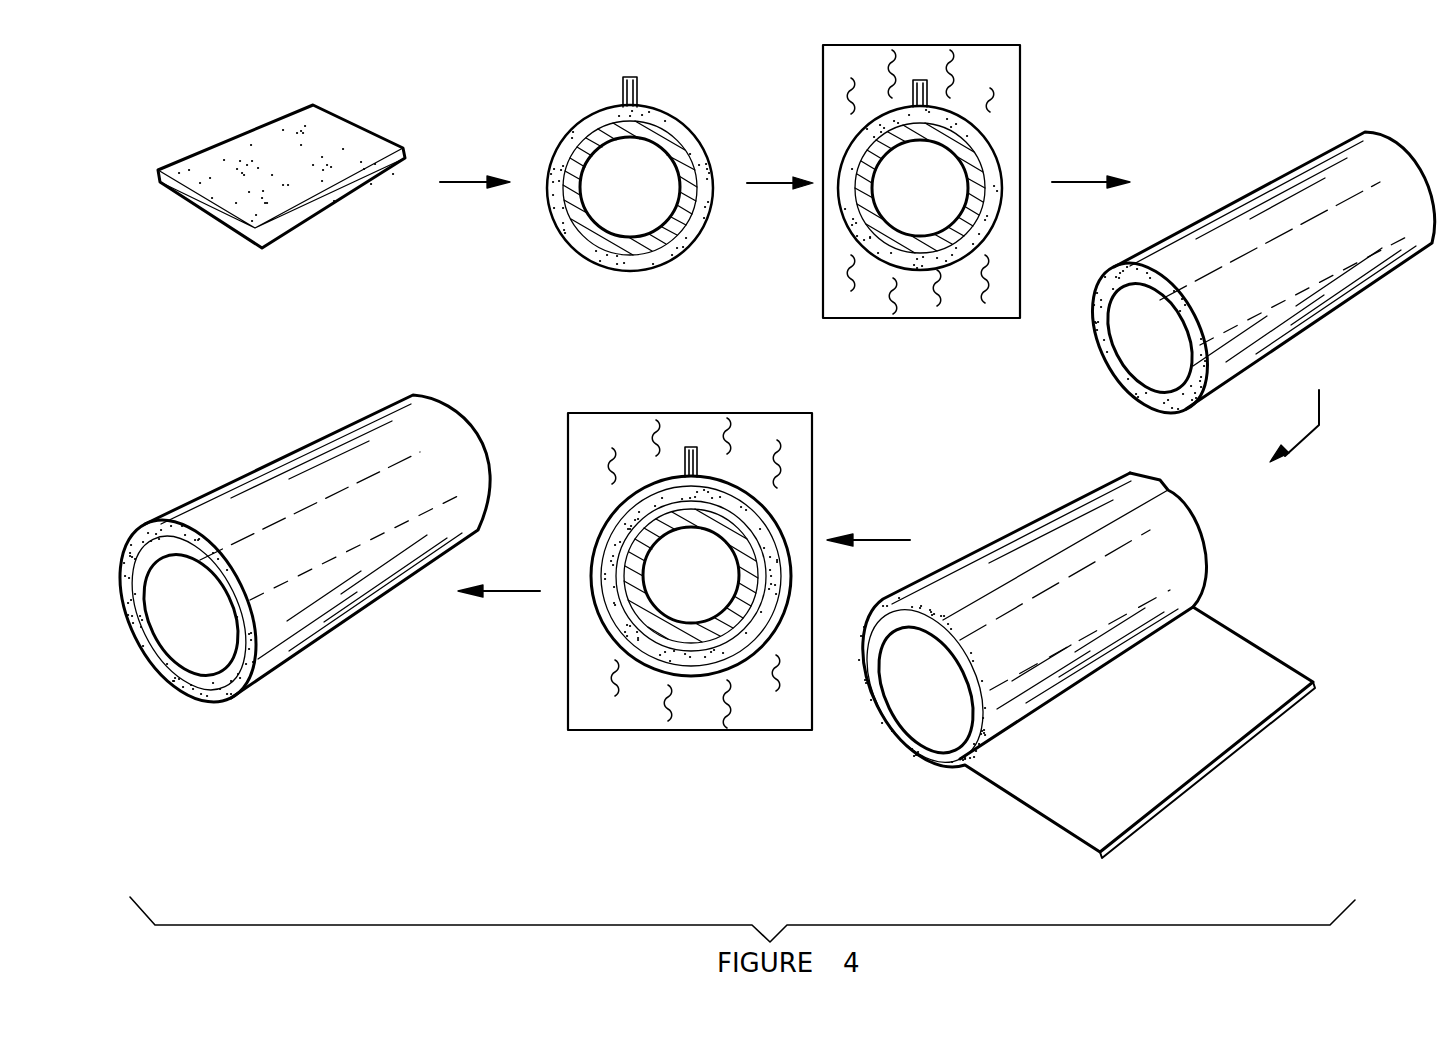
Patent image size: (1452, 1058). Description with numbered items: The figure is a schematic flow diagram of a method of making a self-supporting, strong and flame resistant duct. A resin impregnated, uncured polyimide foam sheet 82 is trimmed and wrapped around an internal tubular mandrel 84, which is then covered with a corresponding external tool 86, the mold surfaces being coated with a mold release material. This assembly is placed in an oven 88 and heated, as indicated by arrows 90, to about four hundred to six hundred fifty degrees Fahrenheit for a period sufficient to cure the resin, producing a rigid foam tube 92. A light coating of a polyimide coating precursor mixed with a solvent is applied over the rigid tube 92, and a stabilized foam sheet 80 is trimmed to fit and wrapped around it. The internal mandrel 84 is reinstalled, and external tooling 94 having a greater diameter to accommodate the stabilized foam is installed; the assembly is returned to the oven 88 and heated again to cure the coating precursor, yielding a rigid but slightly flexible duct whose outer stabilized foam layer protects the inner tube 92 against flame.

The stabilized foam sheet 80 is at (760, 527).
The uncured rigid foam sheet 82 is at (337, 128).
The internal tubular mandrel 84 is at (597, 153).
The external tool 86 is at (632, 75).
The oven 88 is at (1020, 77).
The arrows 90 is at (987, 278).
The rigid foam tube 92 is at (1300, 198).
The external tooling 94 is at (692, 447).